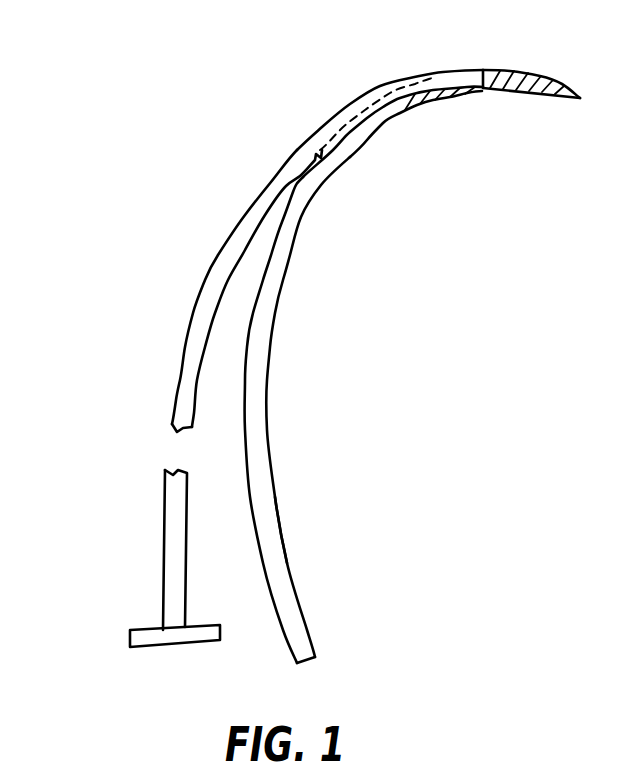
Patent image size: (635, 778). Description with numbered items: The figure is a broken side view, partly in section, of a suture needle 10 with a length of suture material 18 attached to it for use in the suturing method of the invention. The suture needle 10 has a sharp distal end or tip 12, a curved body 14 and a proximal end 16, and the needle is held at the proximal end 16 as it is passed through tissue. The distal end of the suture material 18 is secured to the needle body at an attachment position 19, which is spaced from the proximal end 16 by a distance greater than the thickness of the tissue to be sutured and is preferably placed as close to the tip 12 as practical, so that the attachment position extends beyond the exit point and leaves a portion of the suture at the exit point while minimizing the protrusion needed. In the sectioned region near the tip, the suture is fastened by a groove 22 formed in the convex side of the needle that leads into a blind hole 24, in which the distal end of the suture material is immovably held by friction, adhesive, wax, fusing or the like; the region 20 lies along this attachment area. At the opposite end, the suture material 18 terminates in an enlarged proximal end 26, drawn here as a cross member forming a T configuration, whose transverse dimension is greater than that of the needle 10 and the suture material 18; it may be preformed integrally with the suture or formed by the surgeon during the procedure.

The suture needle 10 is at (275, 489).
The tip 12 is at (548, 80).
The curved body 14 is at (293, 575).
The proximal end 16 is at (315, 650).
The suture material 18 is at (177, 389).
The attachment position 19 is at (443, 68).
The sleeve layer 20 is at (423, 83).
The groove 22 is at (399, 112).
The blind hole 24 is at (473, 92).
The enlarged proximal end 26 is at (130, 641).